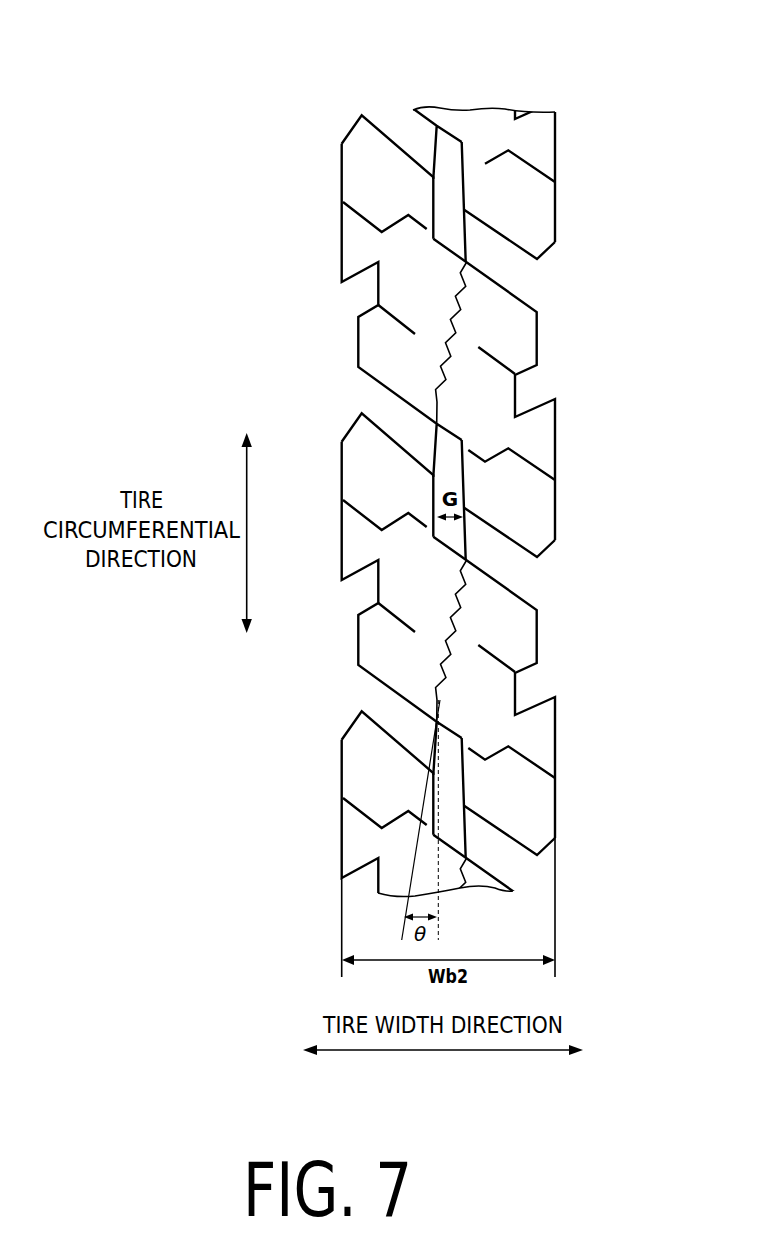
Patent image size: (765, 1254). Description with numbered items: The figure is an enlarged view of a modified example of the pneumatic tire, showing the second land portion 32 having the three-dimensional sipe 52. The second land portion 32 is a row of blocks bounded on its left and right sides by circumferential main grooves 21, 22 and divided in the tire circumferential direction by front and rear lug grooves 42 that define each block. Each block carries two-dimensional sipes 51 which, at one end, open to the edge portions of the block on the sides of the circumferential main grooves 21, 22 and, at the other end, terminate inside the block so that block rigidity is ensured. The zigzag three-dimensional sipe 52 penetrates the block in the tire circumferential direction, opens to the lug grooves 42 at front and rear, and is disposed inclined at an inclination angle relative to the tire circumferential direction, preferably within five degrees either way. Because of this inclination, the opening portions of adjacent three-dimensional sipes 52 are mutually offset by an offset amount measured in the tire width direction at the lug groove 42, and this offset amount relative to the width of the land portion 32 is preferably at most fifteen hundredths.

The circumferential main groove 21 is at (336, 118).
The circumferential main groove 22 is at (561, 118).
The second land portion 32 is at (492, 104).
The lug groove 42 is at (518, 273).
The two-dimensional sipe 51 is at (362, 216).
The three-dimensional sipe 52 is at (437, 402).